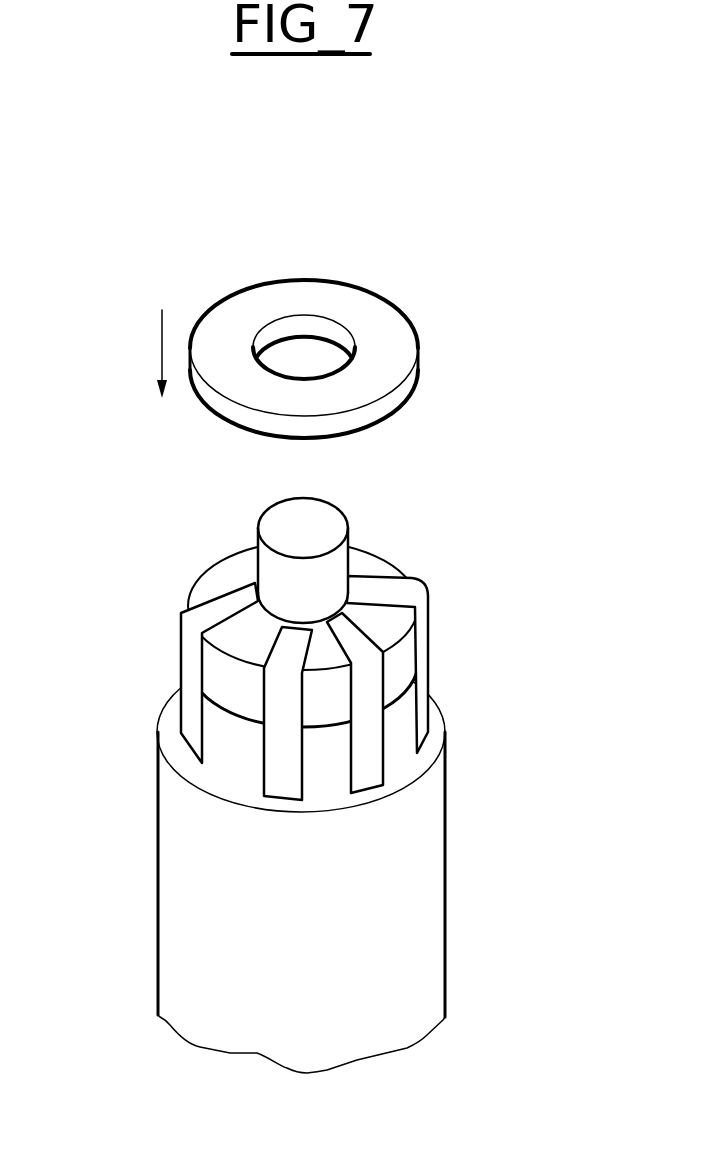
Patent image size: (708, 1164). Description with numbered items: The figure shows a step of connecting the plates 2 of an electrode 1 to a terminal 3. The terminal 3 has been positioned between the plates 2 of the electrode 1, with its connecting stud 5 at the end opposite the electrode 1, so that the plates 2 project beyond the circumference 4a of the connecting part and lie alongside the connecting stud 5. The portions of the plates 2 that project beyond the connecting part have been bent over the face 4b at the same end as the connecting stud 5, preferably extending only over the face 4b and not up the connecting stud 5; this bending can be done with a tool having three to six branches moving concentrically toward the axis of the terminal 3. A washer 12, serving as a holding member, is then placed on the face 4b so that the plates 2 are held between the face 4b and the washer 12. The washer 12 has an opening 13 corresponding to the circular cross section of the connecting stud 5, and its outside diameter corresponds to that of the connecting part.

The electrode 1 is at (410, 916).
The plates 2 is at (428, 622).
The terminal 3 is at (282, 612).
The circumference of the connecting part 4a is at (230, 677).
The face of the connecting part 4b is at (213, 578).
The connecting stud 5 is at (283, 524).
The washer 12 is at (272, 296).
The opening 13 is at (321, 343).